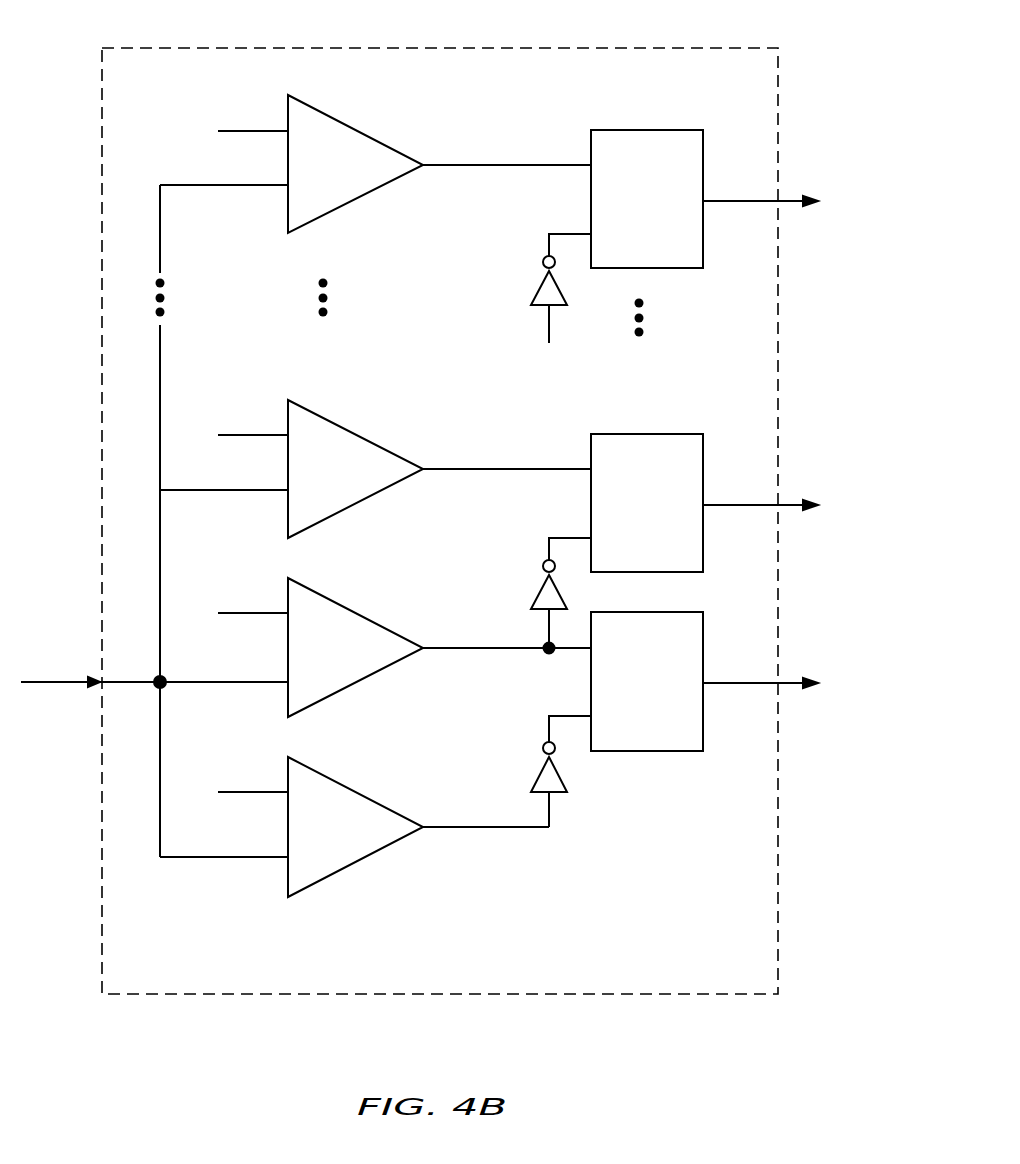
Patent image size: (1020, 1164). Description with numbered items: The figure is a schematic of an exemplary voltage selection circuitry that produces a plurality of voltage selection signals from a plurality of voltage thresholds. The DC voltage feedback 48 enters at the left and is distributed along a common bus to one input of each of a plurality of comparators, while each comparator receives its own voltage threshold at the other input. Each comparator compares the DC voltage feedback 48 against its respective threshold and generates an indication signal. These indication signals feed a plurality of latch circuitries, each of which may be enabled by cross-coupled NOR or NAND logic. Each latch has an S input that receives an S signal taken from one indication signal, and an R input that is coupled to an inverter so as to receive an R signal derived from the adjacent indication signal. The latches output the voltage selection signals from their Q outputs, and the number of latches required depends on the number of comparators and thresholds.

The DC voltage feedback 48 is at (50, 677).